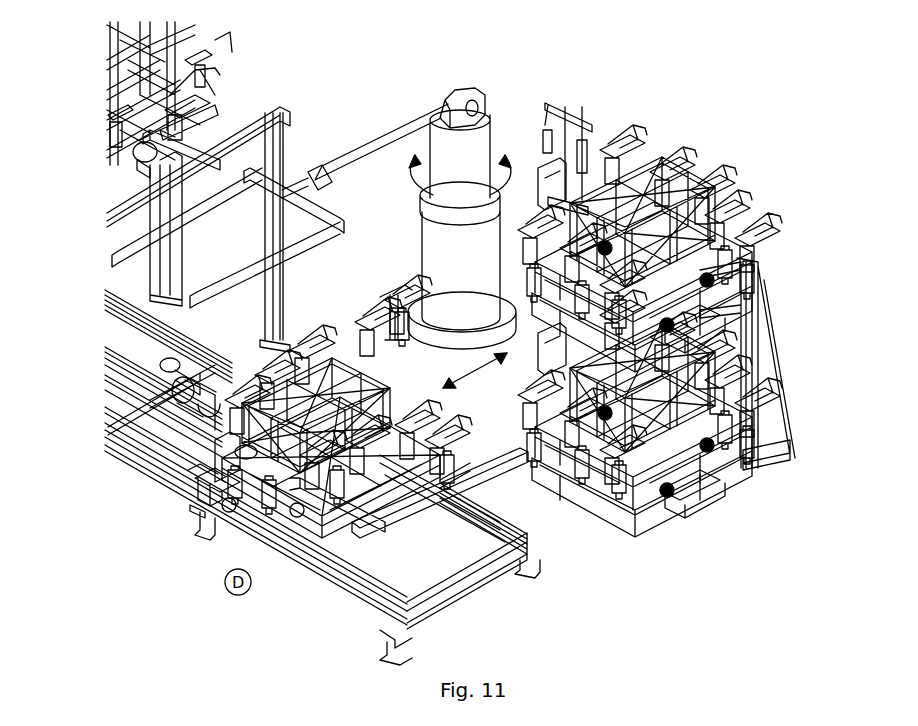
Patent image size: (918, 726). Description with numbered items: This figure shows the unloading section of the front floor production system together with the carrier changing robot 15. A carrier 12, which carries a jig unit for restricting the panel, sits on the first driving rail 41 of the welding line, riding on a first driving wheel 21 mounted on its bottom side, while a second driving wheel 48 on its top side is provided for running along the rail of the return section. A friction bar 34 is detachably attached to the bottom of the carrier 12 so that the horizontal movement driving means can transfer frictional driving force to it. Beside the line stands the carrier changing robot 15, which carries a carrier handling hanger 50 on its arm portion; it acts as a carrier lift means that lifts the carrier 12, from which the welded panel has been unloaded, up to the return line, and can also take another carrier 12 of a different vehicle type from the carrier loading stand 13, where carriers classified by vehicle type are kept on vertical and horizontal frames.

The carrier 12 is at (331, 314).
The carrier loading stand 13 is at (774, 340).
The carrier changing robot 15 is at (485, 143).
The first driving wheel 21 is at (207, 490).
The friction bar 34 is at (136, 158).
The first driving rail 41 is at (130, 452).
The second driving wheel 48 is at (200, 446).
The carrier handling hanger 50 is at (400, 130).